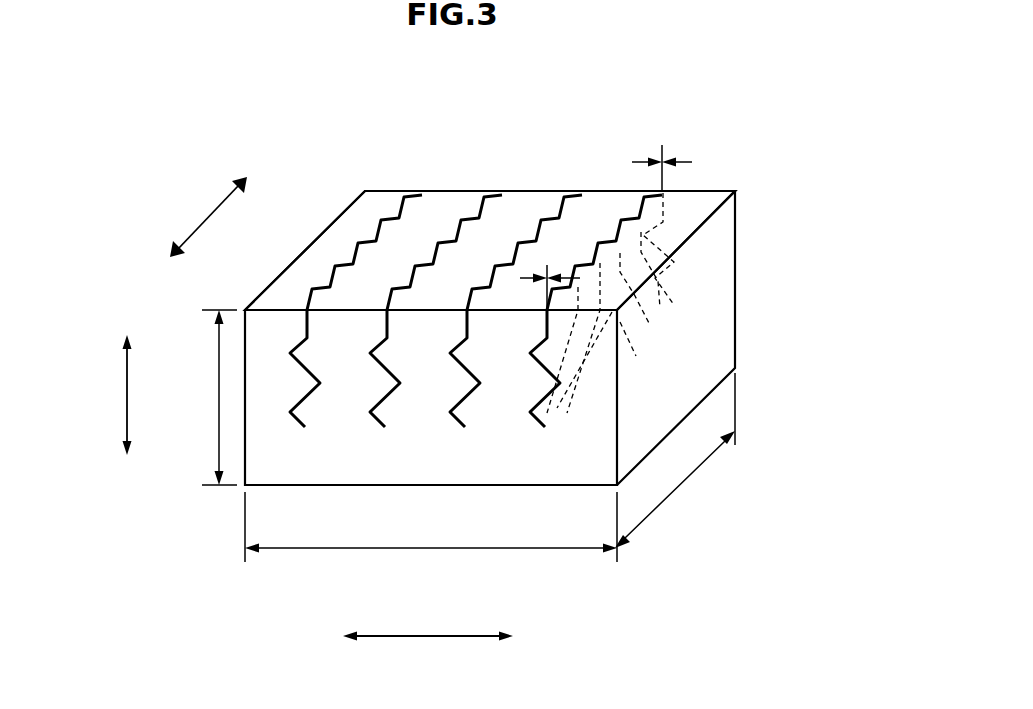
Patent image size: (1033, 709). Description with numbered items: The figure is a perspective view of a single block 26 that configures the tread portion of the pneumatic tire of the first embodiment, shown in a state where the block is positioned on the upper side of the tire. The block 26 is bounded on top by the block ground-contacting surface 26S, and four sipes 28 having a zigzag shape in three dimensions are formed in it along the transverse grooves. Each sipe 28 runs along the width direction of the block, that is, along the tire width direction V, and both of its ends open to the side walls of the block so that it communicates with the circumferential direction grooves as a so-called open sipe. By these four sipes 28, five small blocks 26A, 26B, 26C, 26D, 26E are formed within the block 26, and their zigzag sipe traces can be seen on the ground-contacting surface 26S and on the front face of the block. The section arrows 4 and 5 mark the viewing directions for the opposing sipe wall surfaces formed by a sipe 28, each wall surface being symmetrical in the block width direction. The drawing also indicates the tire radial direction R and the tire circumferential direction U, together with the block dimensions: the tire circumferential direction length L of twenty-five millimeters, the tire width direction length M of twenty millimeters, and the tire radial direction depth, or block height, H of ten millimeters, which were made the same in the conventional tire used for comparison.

The block 26 is at (791, 183).
The block ground-contacting surface 26S is at (438, 205).
The sipe 28 is at (349, 253).
The small block 26A is at (271, 388).
The small block 26B is at (348, 391).
The small block 26C is at (425, 392).
The small block 26D is at (502, 393).
The small block 26E is at (584, 402).
The arrows 4- 4 is at (581, 227).
The arrows 5- 5 is at (630, 220).
The tire radial direction depth (block height) H is at (219, 397).
The tire circumferential direction length L is at (422, 550).
The tire width direction length M is at (680, 489).
The tire width direction V is at (208, 212).
The tire radial direction R is at (125, 397).
The tire circumferential direction U is at (425, 638).